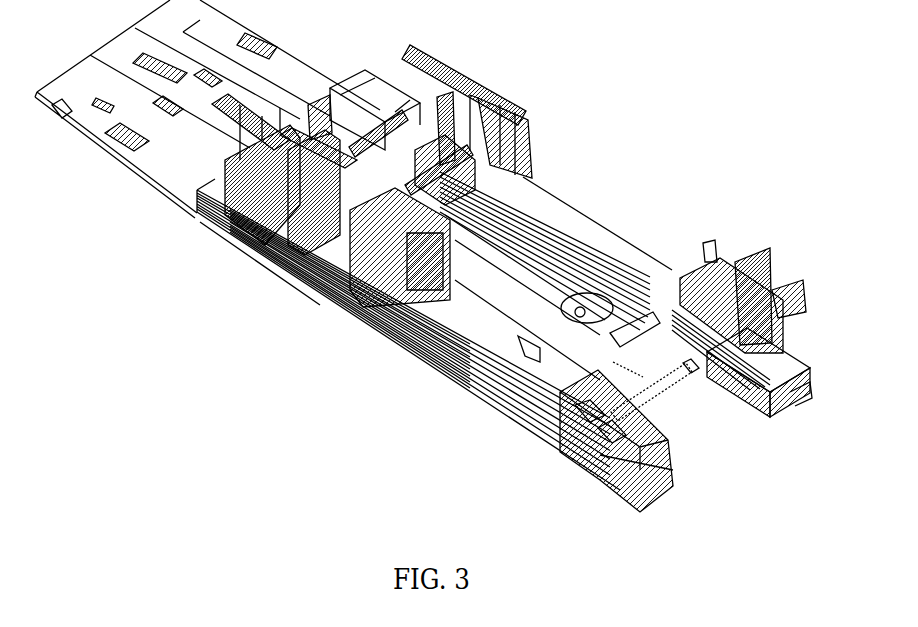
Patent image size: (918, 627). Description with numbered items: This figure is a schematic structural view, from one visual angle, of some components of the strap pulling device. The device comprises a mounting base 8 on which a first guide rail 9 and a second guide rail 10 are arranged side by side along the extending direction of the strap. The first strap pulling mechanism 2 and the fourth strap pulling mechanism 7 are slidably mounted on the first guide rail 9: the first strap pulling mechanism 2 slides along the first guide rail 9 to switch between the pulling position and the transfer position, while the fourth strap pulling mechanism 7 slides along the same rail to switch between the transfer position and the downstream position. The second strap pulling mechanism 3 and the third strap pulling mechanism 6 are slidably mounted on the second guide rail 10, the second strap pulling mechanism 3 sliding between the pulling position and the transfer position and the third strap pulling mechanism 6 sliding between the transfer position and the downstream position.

The first strap pulling mechanism 2 is at (742, 268).
The second strap pulling mechanism 3 is at (293, 276).
The third strap pulling mechanism 6 is at (185, 202).
The fourth strap pulling mechanism 7 is at (468, 72).
The mounting base 8 is at (617, 363).
The first guide rail 9 is at (566, 243).
The second guide rail 10 is at (428, 372).